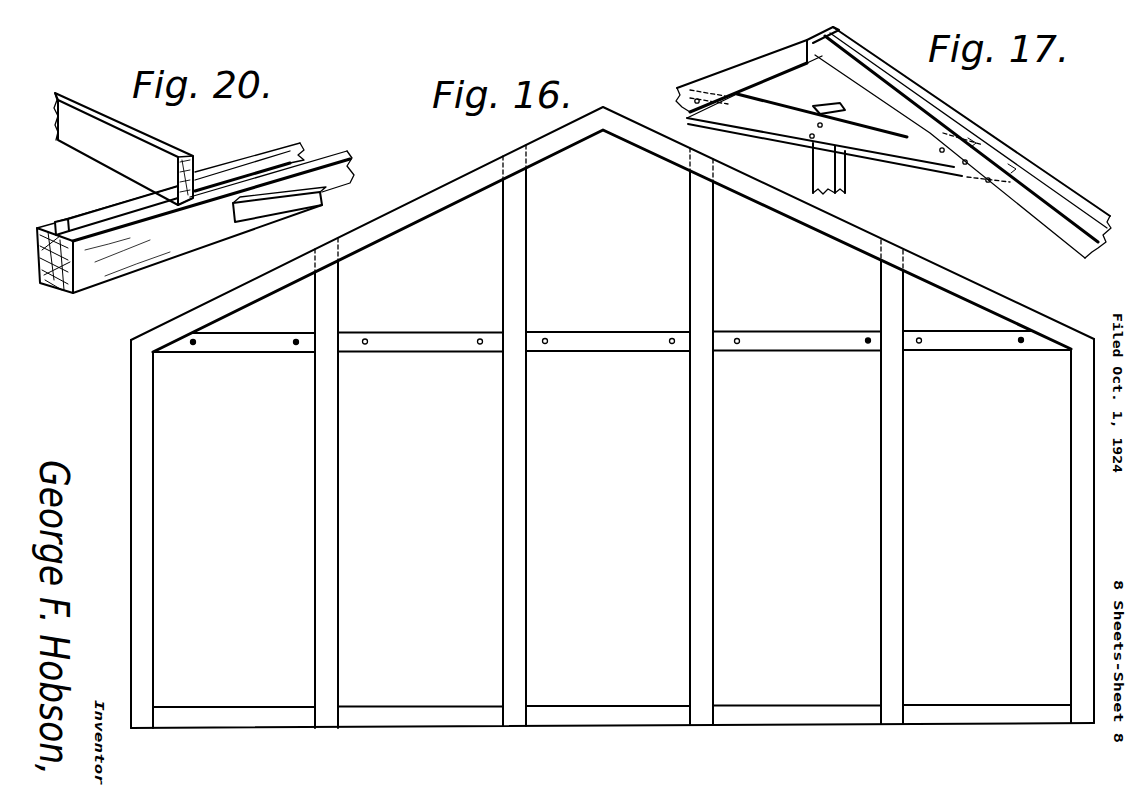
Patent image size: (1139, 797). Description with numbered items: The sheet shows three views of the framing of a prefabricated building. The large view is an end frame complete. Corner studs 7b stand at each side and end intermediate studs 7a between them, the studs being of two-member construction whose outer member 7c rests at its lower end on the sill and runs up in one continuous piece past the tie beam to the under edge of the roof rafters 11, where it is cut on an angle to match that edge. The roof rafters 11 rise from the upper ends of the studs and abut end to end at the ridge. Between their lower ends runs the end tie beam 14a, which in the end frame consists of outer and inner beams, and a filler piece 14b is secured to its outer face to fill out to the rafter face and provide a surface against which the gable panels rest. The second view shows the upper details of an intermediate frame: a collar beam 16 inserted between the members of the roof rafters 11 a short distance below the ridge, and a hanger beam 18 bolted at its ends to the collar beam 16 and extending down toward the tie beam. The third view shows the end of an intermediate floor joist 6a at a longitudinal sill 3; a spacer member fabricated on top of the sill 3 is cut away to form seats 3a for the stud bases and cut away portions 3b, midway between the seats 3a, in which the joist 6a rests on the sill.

In FIG. 20, the longitudinal sill 3 is at (140, 262).
In FIG. 20, the seat 3a is at (247, 158).
In FIG. 20, the cut away portion 3b is at (168, 204).
In FIG. 20, the intermediate floor joist 6a is at (97, 160).
In FIG. 16, the end intermediate stud 7a is at (338, 513).
In FIG. 16, the corner stud 7b is at (131, 480).
In FIG. 16, the outer member of intermediate stud 7c is at (526, 638).
In FIG. 16, the roof rafter 11 is at (424, 210).
In FIG. 17, the roof rafter 11 is at (720, 70).
In FIG. 16, the end tie beam 14a is at (635, 344).
In FIG. 16, the filler piece 14b is at (578, 332).
In FIG. 17, the collar beam 16 is at (881, 156).
In FIG. 17, the hanger beam 18 is at (812, 166).